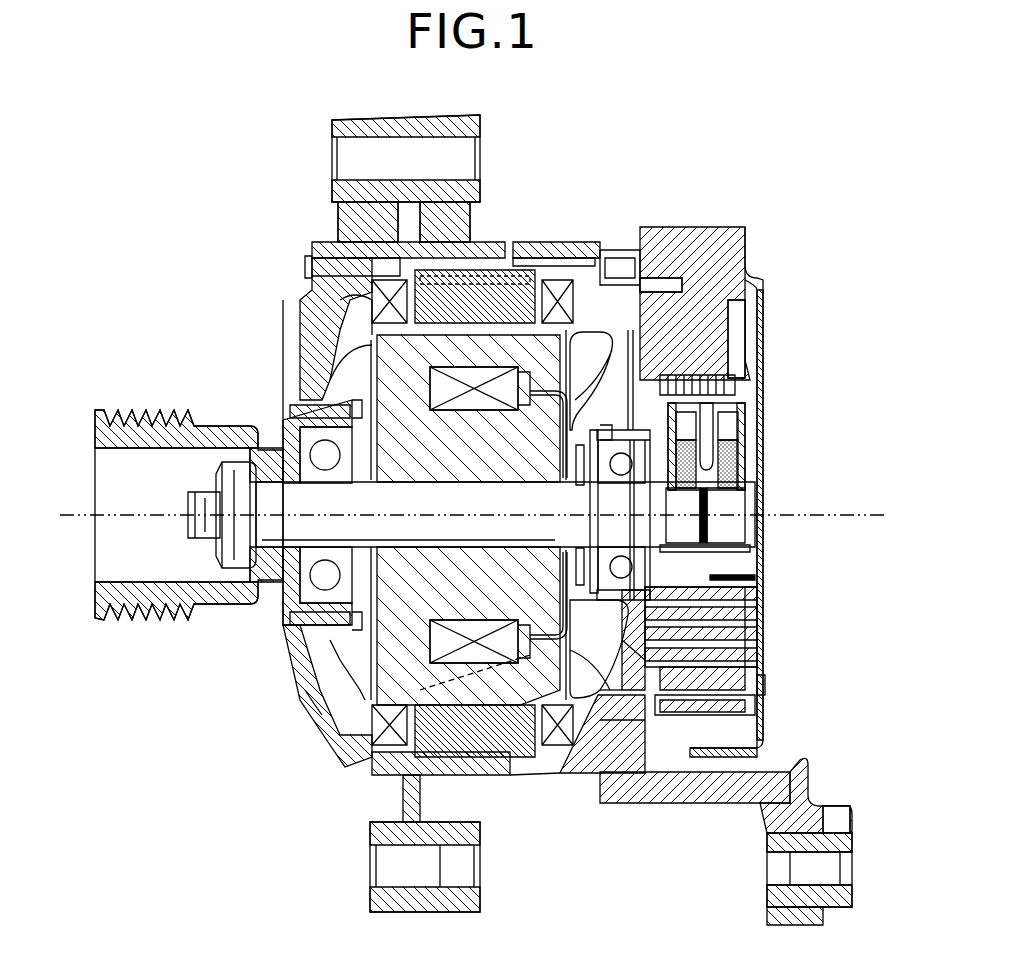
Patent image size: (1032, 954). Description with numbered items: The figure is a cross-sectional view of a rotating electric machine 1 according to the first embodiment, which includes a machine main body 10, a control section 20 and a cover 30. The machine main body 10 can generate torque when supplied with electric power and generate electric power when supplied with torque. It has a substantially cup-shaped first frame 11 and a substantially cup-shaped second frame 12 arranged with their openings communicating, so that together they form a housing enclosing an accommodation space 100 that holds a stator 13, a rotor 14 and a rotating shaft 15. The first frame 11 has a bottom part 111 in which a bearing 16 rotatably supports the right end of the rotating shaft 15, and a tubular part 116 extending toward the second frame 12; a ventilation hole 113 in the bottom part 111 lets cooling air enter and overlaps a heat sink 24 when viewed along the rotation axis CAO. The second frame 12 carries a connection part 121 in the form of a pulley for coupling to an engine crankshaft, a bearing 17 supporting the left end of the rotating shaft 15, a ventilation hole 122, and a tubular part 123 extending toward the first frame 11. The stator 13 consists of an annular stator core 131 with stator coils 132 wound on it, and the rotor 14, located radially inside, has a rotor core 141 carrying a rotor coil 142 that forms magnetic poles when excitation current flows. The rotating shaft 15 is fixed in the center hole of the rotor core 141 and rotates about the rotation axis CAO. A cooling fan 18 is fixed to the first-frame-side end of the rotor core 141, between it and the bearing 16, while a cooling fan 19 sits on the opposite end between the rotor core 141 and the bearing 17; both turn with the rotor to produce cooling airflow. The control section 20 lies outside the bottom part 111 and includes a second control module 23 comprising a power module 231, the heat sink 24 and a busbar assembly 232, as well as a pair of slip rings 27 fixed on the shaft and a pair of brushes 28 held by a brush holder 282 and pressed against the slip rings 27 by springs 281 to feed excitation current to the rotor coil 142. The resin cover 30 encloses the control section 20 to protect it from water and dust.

The rotating electric machine 1 is at (780, 150).
The machine main body 10 is at (292, 298).
The first frame 11 is at (566, 778).
The second frame 12 is at (500, 776).
The stator 13 is at (362, 290).
The rotor 14 is at (372, 345).
The rotating shaft 15 is at (315, 540).
The bearing 16 is at (622, 455).
The bearing 17 is at (240, 468).
The cooling fan 18 is at (600, 690).
The cooling fan 19 is at (312, 690).
The control section 20 is at (765, 400).
The second control module 23 is at (770, 642).
The heat sink 24 is at (745, 612).
The slip ring 27 is at (680, 522).
The brush 28 is at (685, 465).
The cover 30 is at (740, 578).
The accommodation space 100 is at (585, 292).
The bottom part 111 is at (625, 720).
The ventilation hole 113 is at (642, 650).
The tubular part 116 is at (532, 250).
The connection part 121 is at (135, 420).
The ventilation hole 122 is at (360, 673).
The tubular part 123 is at (342, 752).
The stator core 131 is at (472, 290).
The stator coils 132 is at (557, 295).
The rotor core 141 is at (325, 455).
The rotor coil 142 is at (345, 620).
The power module 231 is at (735, 678).
The busbar assembly 232 is at (740, 703).
The spring 281 is at (700, 425).
The brush holder 282 is at (700, 548).
The rotation axis CAO is at (62, 512).